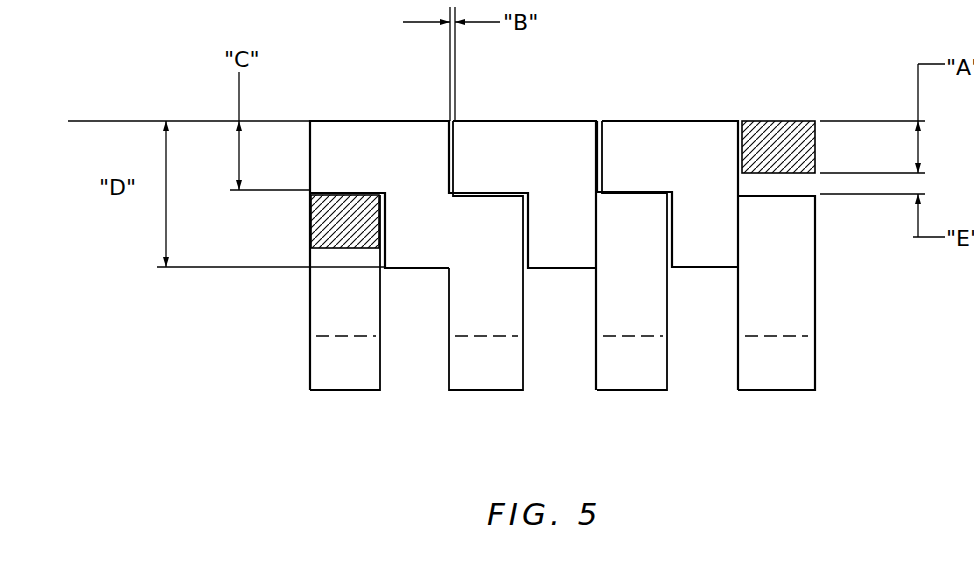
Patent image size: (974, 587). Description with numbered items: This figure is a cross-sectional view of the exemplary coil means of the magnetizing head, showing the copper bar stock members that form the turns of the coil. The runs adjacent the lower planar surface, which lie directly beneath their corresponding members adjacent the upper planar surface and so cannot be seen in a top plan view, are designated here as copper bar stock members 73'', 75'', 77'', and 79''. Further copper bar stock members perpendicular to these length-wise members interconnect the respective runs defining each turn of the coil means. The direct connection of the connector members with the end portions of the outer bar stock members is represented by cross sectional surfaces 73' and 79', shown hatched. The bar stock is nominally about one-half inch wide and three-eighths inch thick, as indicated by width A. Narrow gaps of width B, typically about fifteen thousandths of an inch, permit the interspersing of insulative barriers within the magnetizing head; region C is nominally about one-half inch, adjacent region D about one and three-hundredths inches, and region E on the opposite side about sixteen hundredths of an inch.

The cross sectional surface 73' is at (311, 224).
The cross sectional surface 79' is at (787, 122).
The copper bar stock member 73'' is at (322, 314).
The copper bar stock member 75'' is at (473, 277).
The copper bar stock member 77'' is at (618, 277).
The copper bar stock member 79'' is at (763, 314).